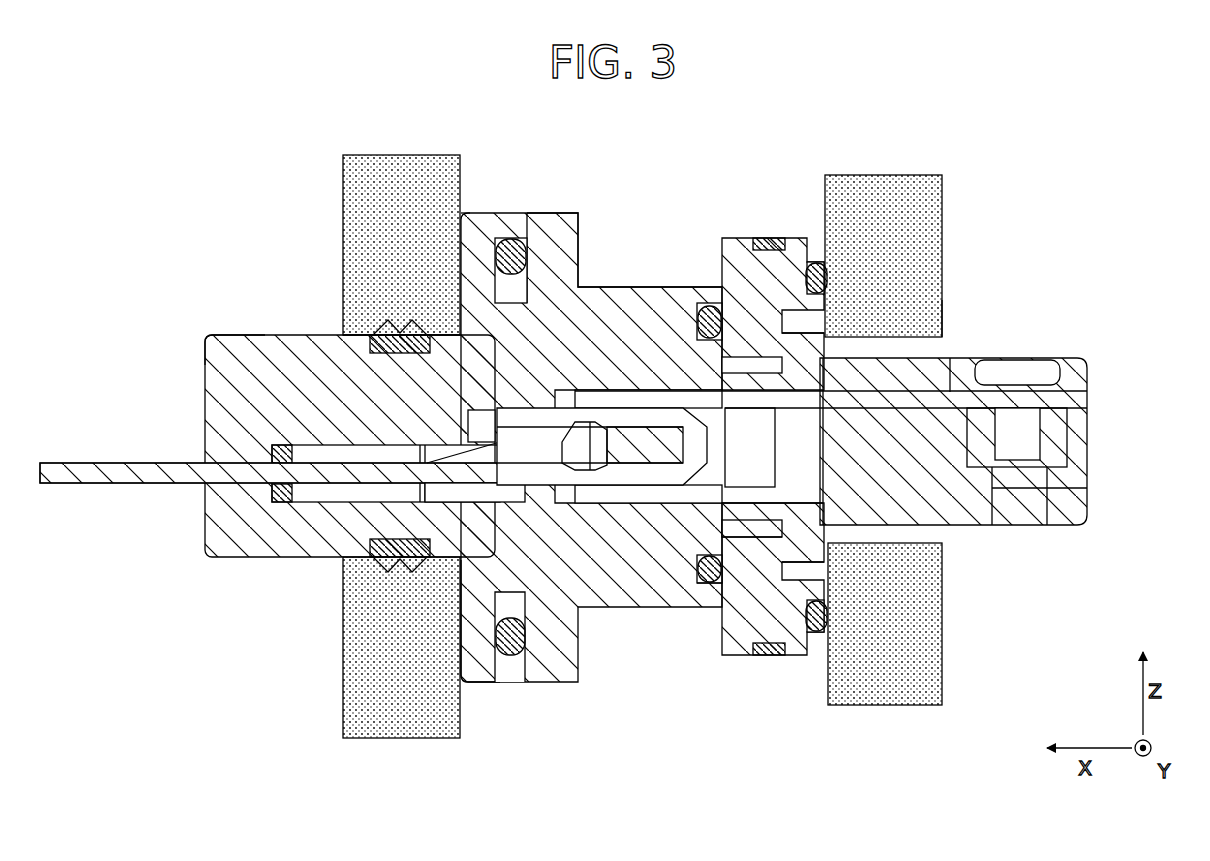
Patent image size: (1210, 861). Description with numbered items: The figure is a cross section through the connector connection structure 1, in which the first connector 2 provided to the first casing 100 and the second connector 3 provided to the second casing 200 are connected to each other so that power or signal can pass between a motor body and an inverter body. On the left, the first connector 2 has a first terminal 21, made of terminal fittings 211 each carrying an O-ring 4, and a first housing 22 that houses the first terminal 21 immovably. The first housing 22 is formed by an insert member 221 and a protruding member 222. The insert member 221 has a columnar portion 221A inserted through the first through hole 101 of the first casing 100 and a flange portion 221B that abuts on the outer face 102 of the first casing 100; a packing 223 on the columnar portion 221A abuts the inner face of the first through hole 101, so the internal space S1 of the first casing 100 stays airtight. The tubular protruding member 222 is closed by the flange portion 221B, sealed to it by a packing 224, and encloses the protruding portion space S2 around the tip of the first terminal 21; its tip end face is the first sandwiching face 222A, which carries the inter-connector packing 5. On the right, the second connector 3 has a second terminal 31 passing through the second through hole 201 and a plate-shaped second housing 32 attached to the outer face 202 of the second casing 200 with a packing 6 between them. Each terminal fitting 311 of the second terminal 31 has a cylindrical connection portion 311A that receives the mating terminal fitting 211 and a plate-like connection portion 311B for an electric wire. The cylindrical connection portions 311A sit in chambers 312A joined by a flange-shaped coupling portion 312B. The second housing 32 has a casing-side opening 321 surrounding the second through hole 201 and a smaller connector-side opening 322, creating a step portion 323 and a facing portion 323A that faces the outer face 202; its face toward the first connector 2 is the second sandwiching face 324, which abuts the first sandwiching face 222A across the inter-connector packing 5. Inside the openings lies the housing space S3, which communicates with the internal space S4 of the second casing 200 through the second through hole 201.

The connector connection structure 1 is at (673, 178).
The first connector 2 is at (500, 683).
The second connector 3 is at (815, 640).
The O-ring 4 is at (275, 455).
The inter-connector packing 5 is at (700, 572).
The packing 6 is at (768, 655).
The first terminal 21 is at (306, 527).
The first housing 22 is at (304, 485).
The second terminal 31 is at (975, 527).
The second housing 32 is at (762, 255).
The first casing 100 is at (398, 185).
The first through hole 101 is at (333, 347).
The outer face 102 is at (470, 245).
The second casing 200 is at (905, 185).
The second through hole 201 is at (945, 345).
The outer face 202 is at (815, 268).
The terminal fitting 211 is at (150, 487).
The insert member 221 is at (205, 385).
The columnar portion 221A is at (240, 350).
The flange portion 221B is at (468, 640).
The protruding member 222 is at (603, 298).
The first sandwiching face 222A is at (745, 555).
The packing 223 is at (347, 333).
The packing 224 is at (510, 250).
The terminal fitting 311 is at (935, 395).
The cylindrical connection portion 311A is at (705, 318).
The plate-like connection portion 311B is at (1060, 372).
The chamber 312A is at (610, 505).
The coupling portion 312B is at (830, 615).
The casing-side opening 321 is at (808, 320).
The connector-side opening 322 is at (700, 565).
The step portion 323 is at (810, 548).
The facing portion 323A is at (830, 345).
The second sandwiching face 324 is at (705, 585).
The internal space S1 is at (180, 250).
The protruding portion space S2 is at (765, 530).
The housing space S3 is at (1000, 490).
The internal space S4 is at (1105, 265).